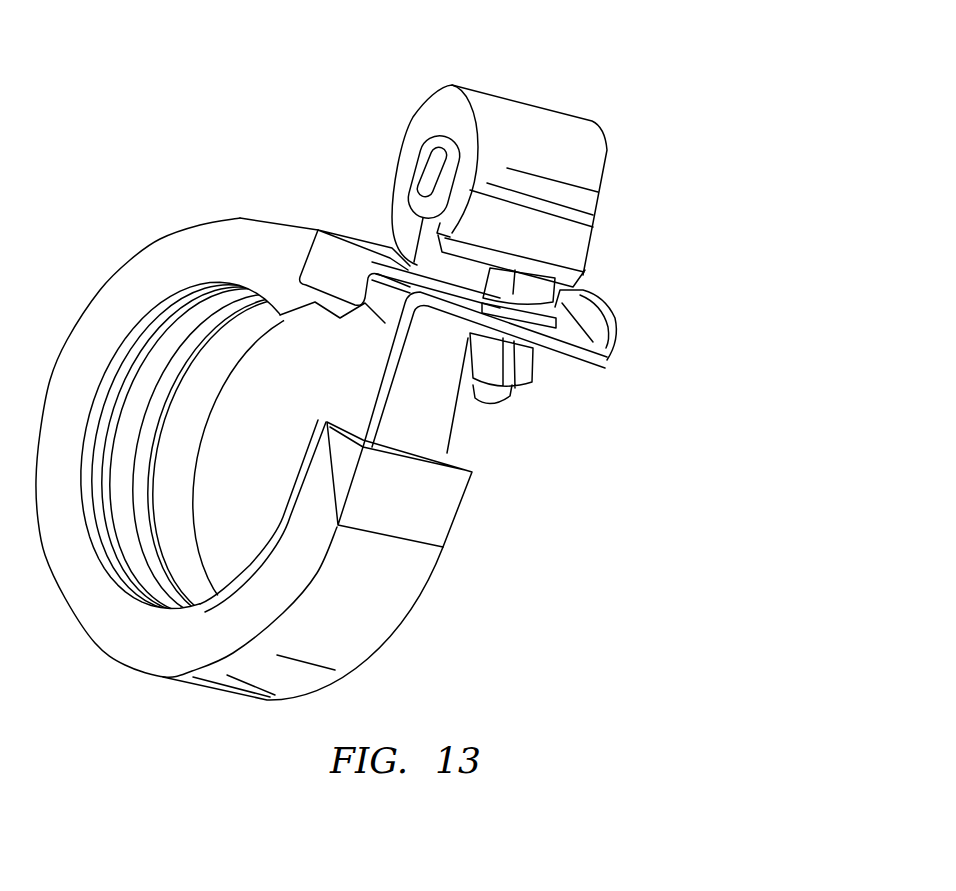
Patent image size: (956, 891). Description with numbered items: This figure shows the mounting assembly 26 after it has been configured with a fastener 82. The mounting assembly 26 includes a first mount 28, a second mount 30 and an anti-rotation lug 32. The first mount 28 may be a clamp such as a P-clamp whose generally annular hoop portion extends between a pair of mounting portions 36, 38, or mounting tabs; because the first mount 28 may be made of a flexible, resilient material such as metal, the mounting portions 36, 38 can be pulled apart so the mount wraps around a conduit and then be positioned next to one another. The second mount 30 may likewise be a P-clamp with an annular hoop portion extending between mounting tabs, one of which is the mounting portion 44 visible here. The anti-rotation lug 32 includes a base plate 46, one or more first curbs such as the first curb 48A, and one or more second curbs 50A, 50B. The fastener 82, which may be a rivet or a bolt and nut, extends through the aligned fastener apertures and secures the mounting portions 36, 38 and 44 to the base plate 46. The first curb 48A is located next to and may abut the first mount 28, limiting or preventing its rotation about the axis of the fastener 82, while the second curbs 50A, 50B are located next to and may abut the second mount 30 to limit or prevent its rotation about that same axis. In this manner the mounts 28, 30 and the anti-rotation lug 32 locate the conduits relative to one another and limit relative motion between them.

The mounting assembly 26 is at (593, 82).
The first mount 28 is at (182, 693).
The second mount 30 is at (615, 137).
The anti-rotation lug 32 is at (625, 347).
The mounting portion 36 is at (365, 332).
The mounting portion 38 is at (553, 362).
The mounting portion 44 is at (573, 294).
The base plate 46 is at (612, 358).
The first curb 48A is at (327, 250).
The second curb 50A is at (458, 283).
The second curb 50B is at (617, 312).
The fastener 82 is at (528, 393).